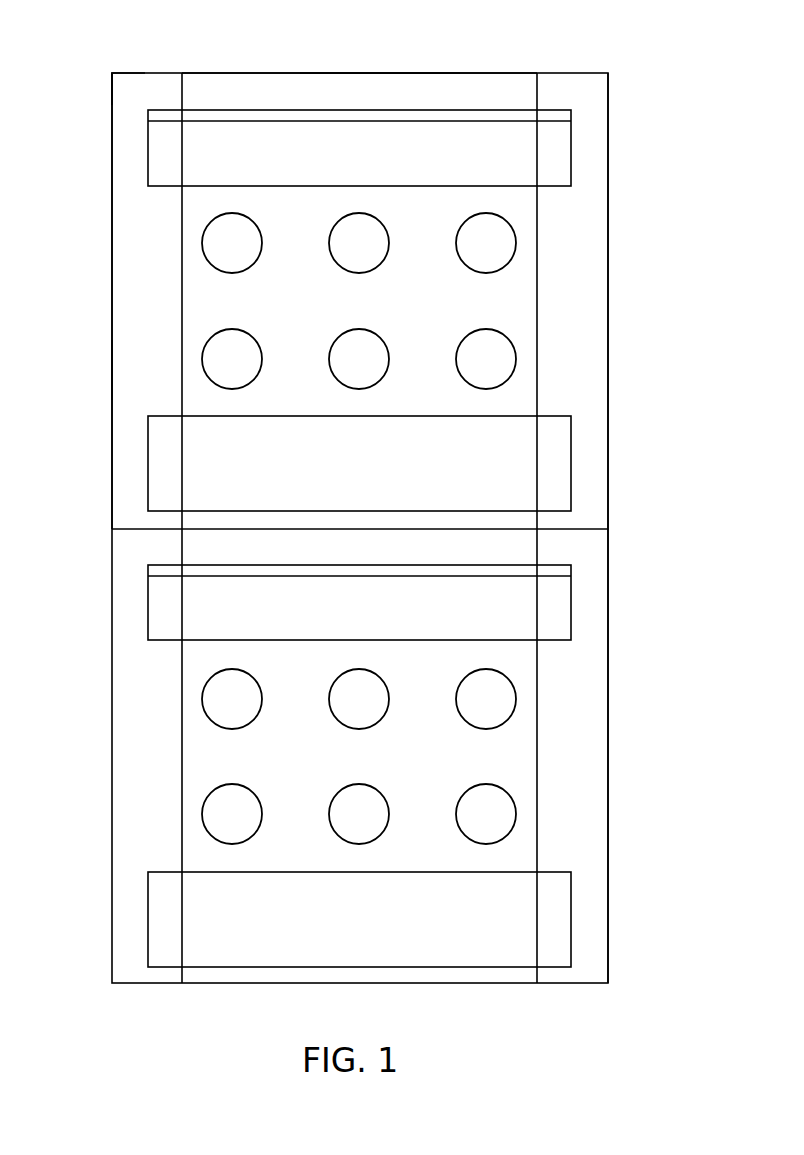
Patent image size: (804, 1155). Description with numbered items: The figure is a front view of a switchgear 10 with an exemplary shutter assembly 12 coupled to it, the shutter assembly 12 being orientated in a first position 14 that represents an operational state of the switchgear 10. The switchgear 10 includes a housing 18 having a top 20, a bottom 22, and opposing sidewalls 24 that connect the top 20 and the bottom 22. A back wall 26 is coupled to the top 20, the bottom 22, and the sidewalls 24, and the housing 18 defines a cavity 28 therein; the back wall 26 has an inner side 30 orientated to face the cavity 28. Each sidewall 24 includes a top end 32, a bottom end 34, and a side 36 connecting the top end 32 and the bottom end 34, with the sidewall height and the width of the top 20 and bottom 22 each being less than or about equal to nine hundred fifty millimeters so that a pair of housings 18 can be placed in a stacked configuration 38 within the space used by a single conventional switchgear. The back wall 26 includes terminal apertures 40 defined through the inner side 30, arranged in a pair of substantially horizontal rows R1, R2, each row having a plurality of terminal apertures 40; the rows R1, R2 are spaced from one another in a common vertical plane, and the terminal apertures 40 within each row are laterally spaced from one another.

The switchgear 10 is at (135, 262).
The shutter assembly 12 is at (465, 130).
The first position 14 is at (638, 202).
The housing 18 is at (140, 318).
The top 20 is at (265, 73).
The bottom 22 is at (135, 533).
The sidewall 24 is at (111, 376).
The back wall 26 is at (338, 98).
The cavity 28 is at (584, 317).
The inner side 30 is at (410, 97).
The top end 32 is at (112, 73).
The bottom end 34 is at (112, 529).
The side 36 is at (110, 422).
The stacked configuration 38 is at (642, 568).
The terminal aperture 40 is at (517, 240).
The row R1 is at (192, 338).
The row R2 is at (270, 253).